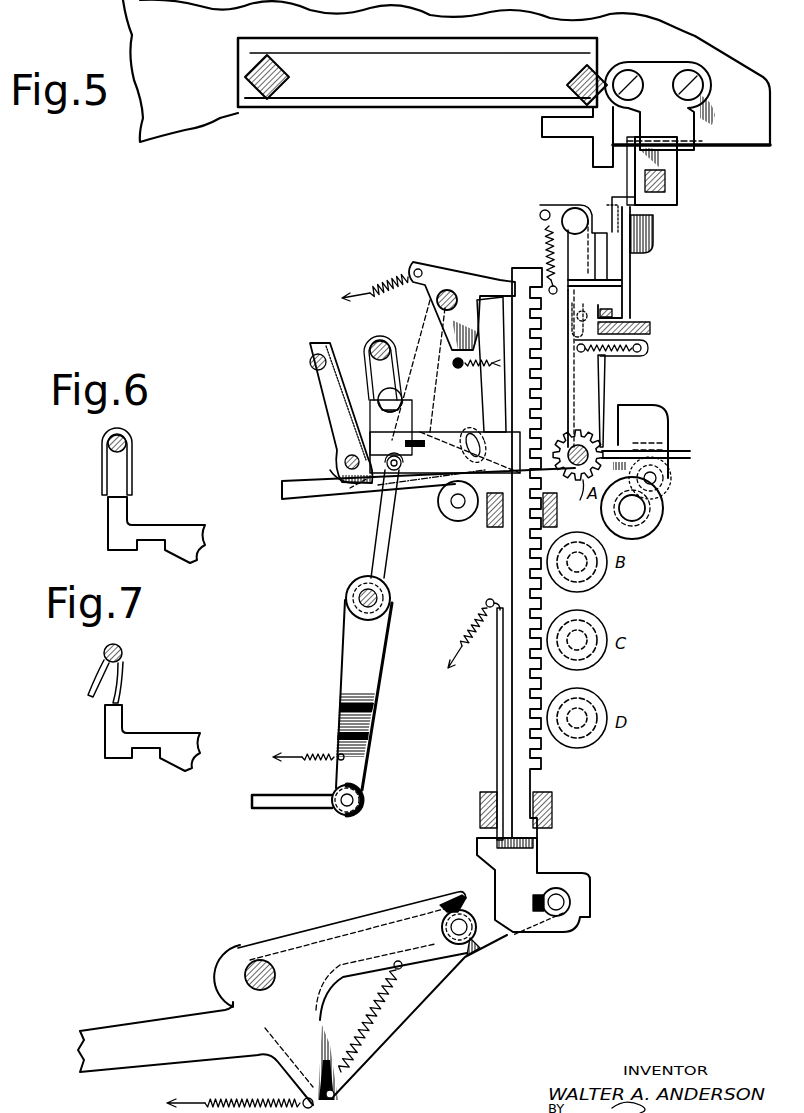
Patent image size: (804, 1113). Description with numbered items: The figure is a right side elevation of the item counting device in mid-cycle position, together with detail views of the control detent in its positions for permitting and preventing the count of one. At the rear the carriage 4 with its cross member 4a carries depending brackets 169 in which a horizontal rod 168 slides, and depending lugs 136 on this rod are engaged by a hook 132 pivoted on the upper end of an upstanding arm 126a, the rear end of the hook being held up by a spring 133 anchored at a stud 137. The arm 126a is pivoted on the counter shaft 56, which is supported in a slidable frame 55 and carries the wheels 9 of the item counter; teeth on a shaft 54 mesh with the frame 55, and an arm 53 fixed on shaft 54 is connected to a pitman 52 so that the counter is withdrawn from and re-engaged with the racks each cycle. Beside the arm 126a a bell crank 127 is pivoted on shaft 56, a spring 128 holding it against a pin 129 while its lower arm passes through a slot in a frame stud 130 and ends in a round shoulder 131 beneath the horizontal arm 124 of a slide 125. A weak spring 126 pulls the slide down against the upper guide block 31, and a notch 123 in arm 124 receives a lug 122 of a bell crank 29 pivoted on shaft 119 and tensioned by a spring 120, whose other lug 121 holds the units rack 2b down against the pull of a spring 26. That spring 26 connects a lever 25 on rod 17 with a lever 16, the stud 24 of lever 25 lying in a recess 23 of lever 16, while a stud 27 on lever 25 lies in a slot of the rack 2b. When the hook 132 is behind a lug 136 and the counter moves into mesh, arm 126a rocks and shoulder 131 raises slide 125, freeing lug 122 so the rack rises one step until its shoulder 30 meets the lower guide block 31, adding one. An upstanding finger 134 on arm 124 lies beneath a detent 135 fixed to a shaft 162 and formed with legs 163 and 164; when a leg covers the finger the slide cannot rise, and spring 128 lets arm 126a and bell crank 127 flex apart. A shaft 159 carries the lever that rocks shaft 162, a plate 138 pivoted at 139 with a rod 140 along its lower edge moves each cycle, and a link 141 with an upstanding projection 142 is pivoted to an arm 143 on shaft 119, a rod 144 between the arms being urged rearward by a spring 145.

In FIG. 5, the carriage 4 is at (703, 40).
In FIG. 5, the frame cross bar 4a is at (433, 97).
In FIG. 5, the depending brackets 169 is at (678, 143).
In FIG. 5, the rod 168 is at (668, 182).
In FIG. 5, the hook 132 is at (655, 232).
In FIG. 5, the depending lugs 136 is at (622, 197).
In FIG. 5, the stud 137 is at (578, 212).
In FIG. 5, the spring 133 is at (548, 242).
In FIG. 5, the upstanding arm 126a is at (623, 262).
In FIG. 5, the pin 129 is at (588, 312).
In FIG. 5, the spring 128 is at (651, 330).
In FIG. 5, the bell crank 127 is at (604, 362).
In FIG. 5, the slidable frame 55 is at (604, 412).
In FIG. 5, the pitman 52 is at (661, 424).
In FIG. 5, the shaft 54 is at (640, 515).
In FIG. 5, the arm 53 is at (667, 482).
In FIG. 5, the shaft 56 is at (566, 440).
In FIG. 5, the wheels 9 is at (578, 500).
In FIG. 5, the rack 2b is at (520, 270).
In FIG. 5, the slide 125 is at (497, 706).
In FIG. 5, the weak spring 126 is at (468, 636).
In FIG. 5, the guide blocks 31 is at (481, 800).
In FIG. 5, the shoulder 30 is at (477, 839).
In FIG. 5, the studs 27 is at (572, 906).
In FIG. 5, the spring 120 is at (405, 282).
In FIG. 5, the bell crank 29 is at (496, 281).
In FIG. 5, the shaft 119 is at (447, 289).
In FIG. 5, the lug 121 is at (496, 364).
In FIG. 5, the rod 144 is at (464, 360).
In FIG. 5, the spring 145 is at (475, 372).
In FIG. 5, the horizontal arm 124 is at (425, 432).
In FIG. 5, the arm 143 is at (475, 417).
In FIG. 5, the shaft 162 is at (382, 340).
In FIG. 6, the shaft 162 is at (125, 438).
In FIG. 7, the shaft 162 is at (123, 646).
In FIG. 5, the detent 135 is at (369, 339).
In FIG. 6, the detent 135 is at (104, 447).
In FIG. 7, the detent 135 is at (101, 652).
In FIG. 5, the leg 163 is at (374, 382).
In FIG. 6, the leg 163 is at (102, 477).
In FIG. 7, the leg 163 is at (92, 681).
In FIG. 5, the leg 164 is at (398, 386).
In FIG. 6, the leg 164 is at (133, 482).
In FIG. 7, the leg 164 is at (120, 690).
In FIG. 5, the finger 134 is at (374, 403).
In FIG. 6, the finger 134 is at (108, 524).
In FIG. 7, the finger 134 is at (105, 733).
In FIG. 5, the plate 138 is at (330, 382).
In FIG. 5, the pivot 139 is at (312, 356).
In FIG. 5, the rod 140 is at (345, 461).
In FIG. 5, the upstanding projection 142 is at (333, 470).
In FIG. 5, the link 141 is at (306, 496).
In FIG. 5, the notch 123 is at (365, 486).
In FIG. 5, the lug 122 is at (400, 472).
In FIG. 5, the stud 130 is at (452, 512).
In FIG. 5, the round shoulder 131 is at (398, 524).
In FIG. 5, the shaft 159 is at (355, 600).
In FIG. 5, the levers 16 is at (130, 1060).
In FIG. 5, the rod 17 is at (255, 958).
In FIG. 5, the recess 23 is at (468, 905).
In FIG. 5, the lever 25 is at (500, 940).
In FIG. 5, the stud 24 is at (478, 945).
In FIG. 5, the spring 26 is at (386, 992).